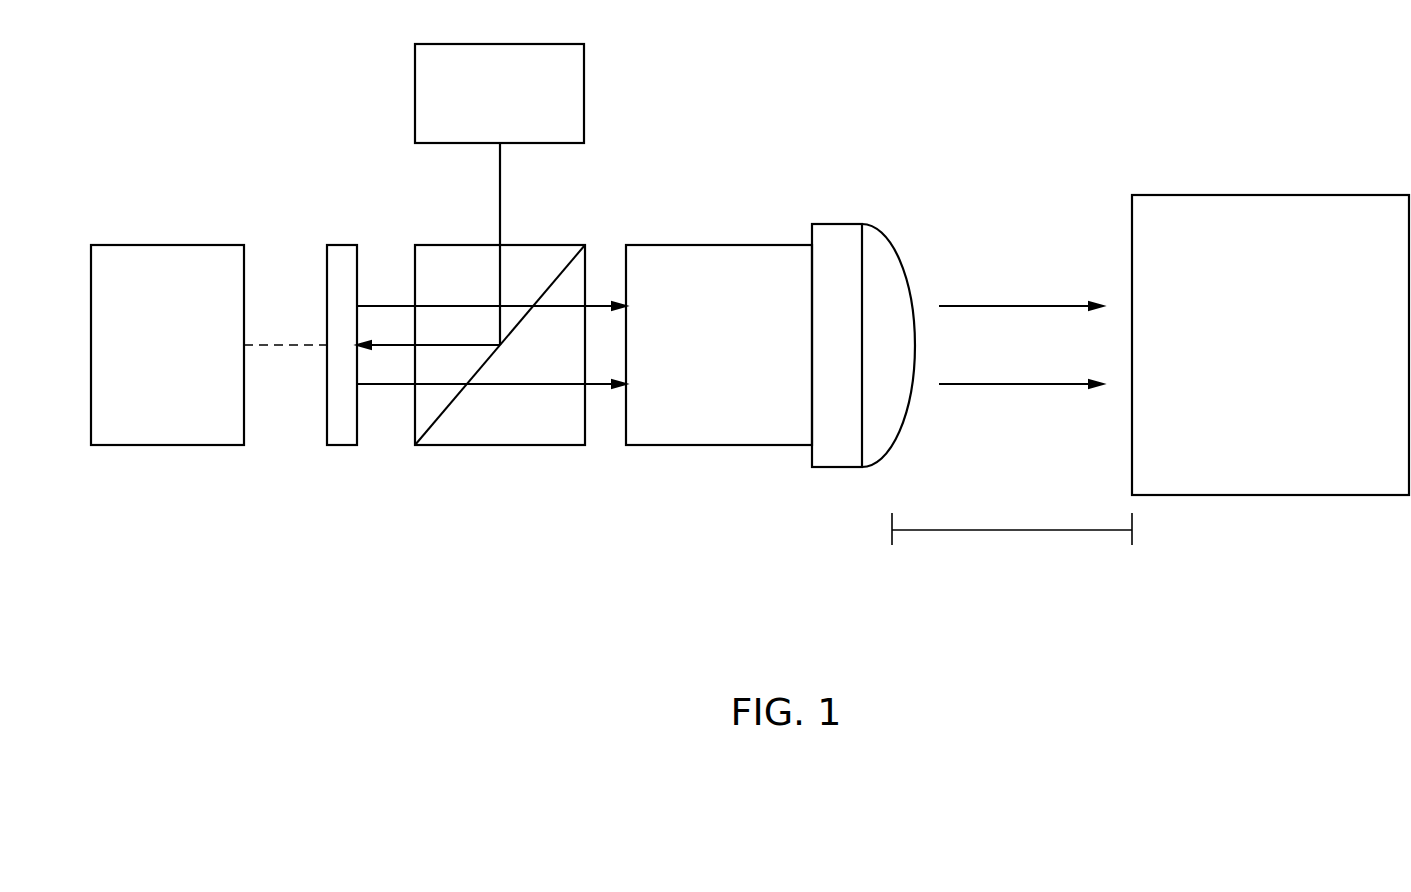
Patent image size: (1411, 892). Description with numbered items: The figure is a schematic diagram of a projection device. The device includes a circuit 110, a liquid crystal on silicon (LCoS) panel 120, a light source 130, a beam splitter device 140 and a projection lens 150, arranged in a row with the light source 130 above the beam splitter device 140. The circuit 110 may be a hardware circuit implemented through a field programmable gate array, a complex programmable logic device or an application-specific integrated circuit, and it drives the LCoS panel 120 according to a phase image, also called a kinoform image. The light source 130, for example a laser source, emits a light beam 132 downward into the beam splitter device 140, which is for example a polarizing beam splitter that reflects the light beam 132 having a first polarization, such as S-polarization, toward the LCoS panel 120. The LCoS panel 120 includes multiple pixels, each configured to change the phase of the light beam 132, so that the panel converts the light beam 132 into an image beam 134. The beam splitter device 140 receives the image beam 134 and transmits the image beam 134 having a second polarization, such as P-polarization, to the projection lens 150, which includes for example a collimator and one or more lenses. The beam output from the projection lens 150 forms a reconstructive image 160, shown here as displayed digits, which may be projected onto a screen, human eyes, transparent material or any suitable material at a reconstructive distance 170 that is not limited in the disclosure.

The circuit 110 is at (190, 378).
The liquid crystal on silicon (LCoS) panel 120 is at (343, 445).
The light source 130 is at (584, 92).
The light beam 132 is at (500, 195).
The image beam 134 is at (387, 385).
The beam splitter device 140 is at (502, 445).
The projection lens 150 is at (737, 445).
The reconstructive image 160 is at (1273, 495).
The reconstructive distance 170 is at (1013, 530).